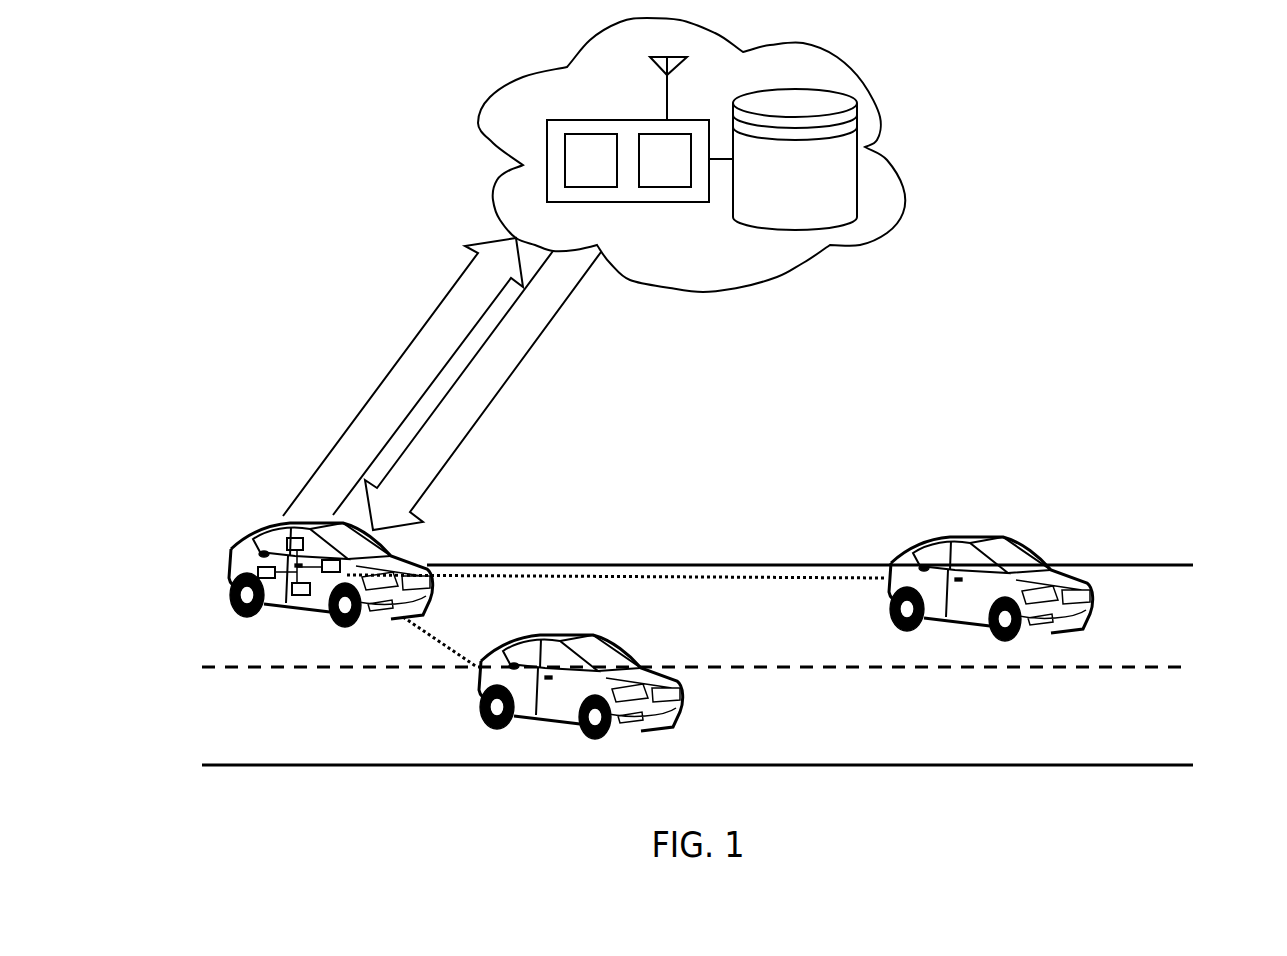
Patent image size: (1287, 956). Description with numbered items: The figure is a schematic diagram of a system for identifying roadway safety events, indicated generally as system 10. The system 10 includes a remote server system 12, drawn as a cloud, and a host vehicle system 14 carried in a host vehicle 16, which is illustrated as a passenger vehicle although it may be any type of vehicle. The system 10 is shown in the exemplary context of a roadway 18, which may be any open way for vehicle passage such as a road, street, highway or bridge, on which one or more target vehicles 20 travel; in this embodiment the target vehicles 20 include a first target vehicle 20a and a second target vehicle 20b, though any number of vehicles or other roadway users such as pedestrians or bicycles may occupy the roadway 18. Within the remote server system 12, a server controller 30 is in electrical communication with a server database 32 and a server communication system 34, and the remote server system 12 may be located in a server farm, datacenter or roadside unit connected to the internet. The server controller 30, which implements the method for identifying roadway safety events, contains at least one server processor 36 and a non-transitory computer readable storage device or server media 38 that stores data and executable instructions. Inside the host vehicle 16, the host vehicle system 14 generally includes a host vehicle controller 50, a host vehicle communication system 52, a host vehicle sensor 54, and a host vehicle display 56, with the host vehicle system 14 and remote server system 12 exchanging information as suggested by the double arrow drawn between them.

The system for identifying roadway safety events 10 is at (218, 198).
The remote server system 12 is at (498, 80).
The host vehicle system 14 is at (257, 558).
The host vehicle 16 is at (232, 590).
The roadway 18 is at (1172, 562).
The target vehicles 20 is at (547, 635).
The first target vehicle 20a is at (480, 688).
The second target vehicle 20b is at (892, 597).
The server controller 30 is at (627, 202).
The server database 32 is at (781, 191).
The server communication system 34 is at (660, 72).
The server processor 36 is at (576, 173).
The server media 38 is at (650, 173).
The host vehicle controller 50 is at (268, 580).
The host vehicle communication system 52 is at (300, 597).
The host vehicle sensor 54 is at (347, 565).
The host vehicle display 56 is at (287, 543).